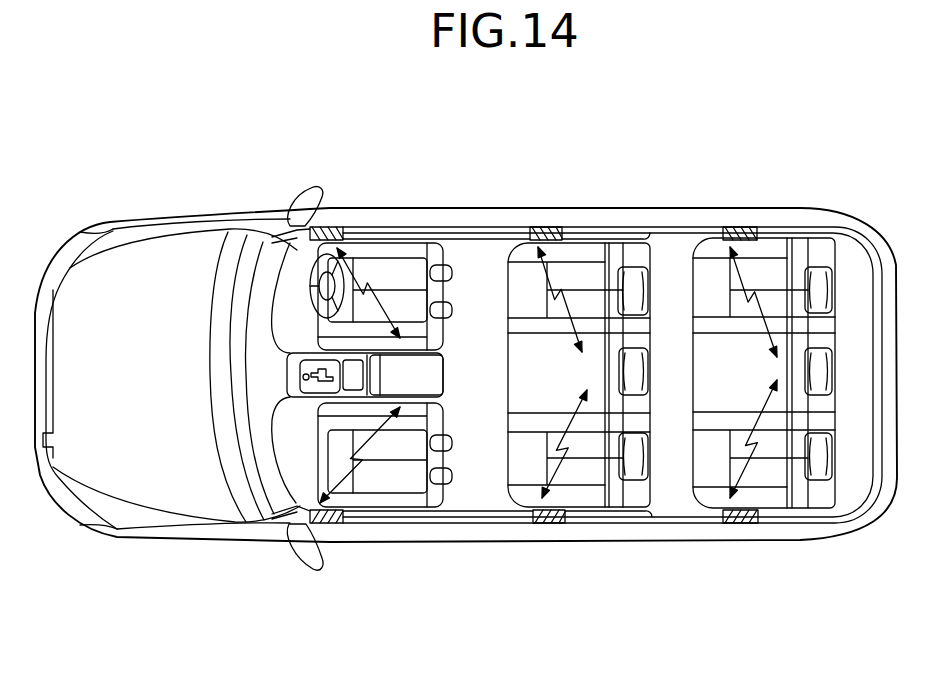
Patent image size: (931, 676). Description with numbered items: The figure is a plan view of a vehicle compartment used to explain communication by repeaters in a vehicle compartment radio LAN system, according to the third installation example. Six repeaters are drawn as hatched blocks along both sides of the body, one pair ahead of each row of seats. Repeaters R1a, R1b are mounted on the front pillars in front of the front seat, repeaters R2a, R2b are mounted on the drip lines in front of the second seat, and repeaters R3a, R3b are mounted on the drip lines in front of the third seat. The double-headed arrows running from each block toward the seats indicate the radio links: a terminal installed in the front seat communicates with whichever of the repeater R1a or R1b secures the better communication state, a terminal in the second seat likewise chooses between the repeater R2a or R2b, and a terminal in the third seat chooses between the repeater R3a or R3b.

The repeater R1a is at (337, 527).
The repeater R1b is at (340, 227).
The repeater R2a is at (548, 527).
The repeater R2b is at (552, 227).
The repeater R3a is at (743, 527).
The repeater R3b is at (747, 227).